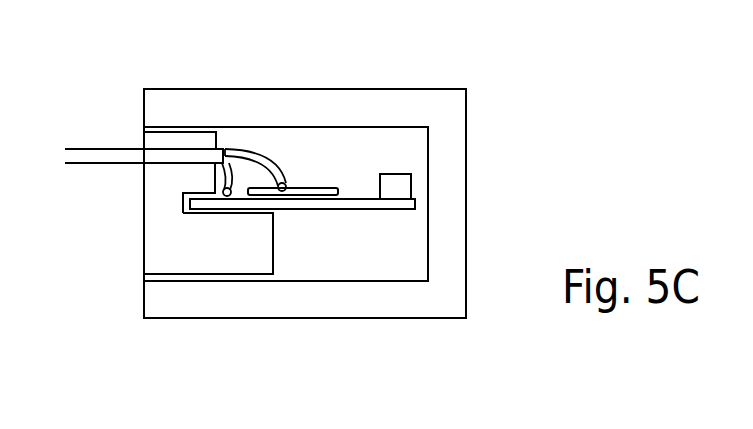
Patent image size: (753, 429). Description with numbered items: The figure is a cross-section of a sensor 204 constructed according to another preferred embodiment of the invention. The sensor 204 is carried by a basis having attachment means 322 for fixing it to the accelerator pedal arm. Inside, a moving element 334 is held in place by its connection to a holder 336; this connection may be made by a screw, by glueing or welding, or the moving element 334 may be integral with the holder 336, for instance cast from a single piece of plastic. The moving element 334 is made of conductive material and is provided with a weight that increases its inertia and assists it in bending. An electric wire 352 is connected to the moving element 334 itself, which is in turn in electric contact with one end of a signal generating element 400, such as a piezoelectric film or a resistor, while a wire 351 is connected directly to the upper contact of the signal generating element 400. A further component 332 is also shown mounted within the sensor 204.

The sensor 204 is at (122, 279).
The attachment means 322 is at (325, 102).
The electronic component on substrate 332 is at (393, 187).
The moving element 334 is at (365, 203).
The holder 336 is at (201, 247).
The wire 351 is at (257, 152).
The electric wire 352 is at (226, 180).
The signal generating element 400 is at (315, 193).